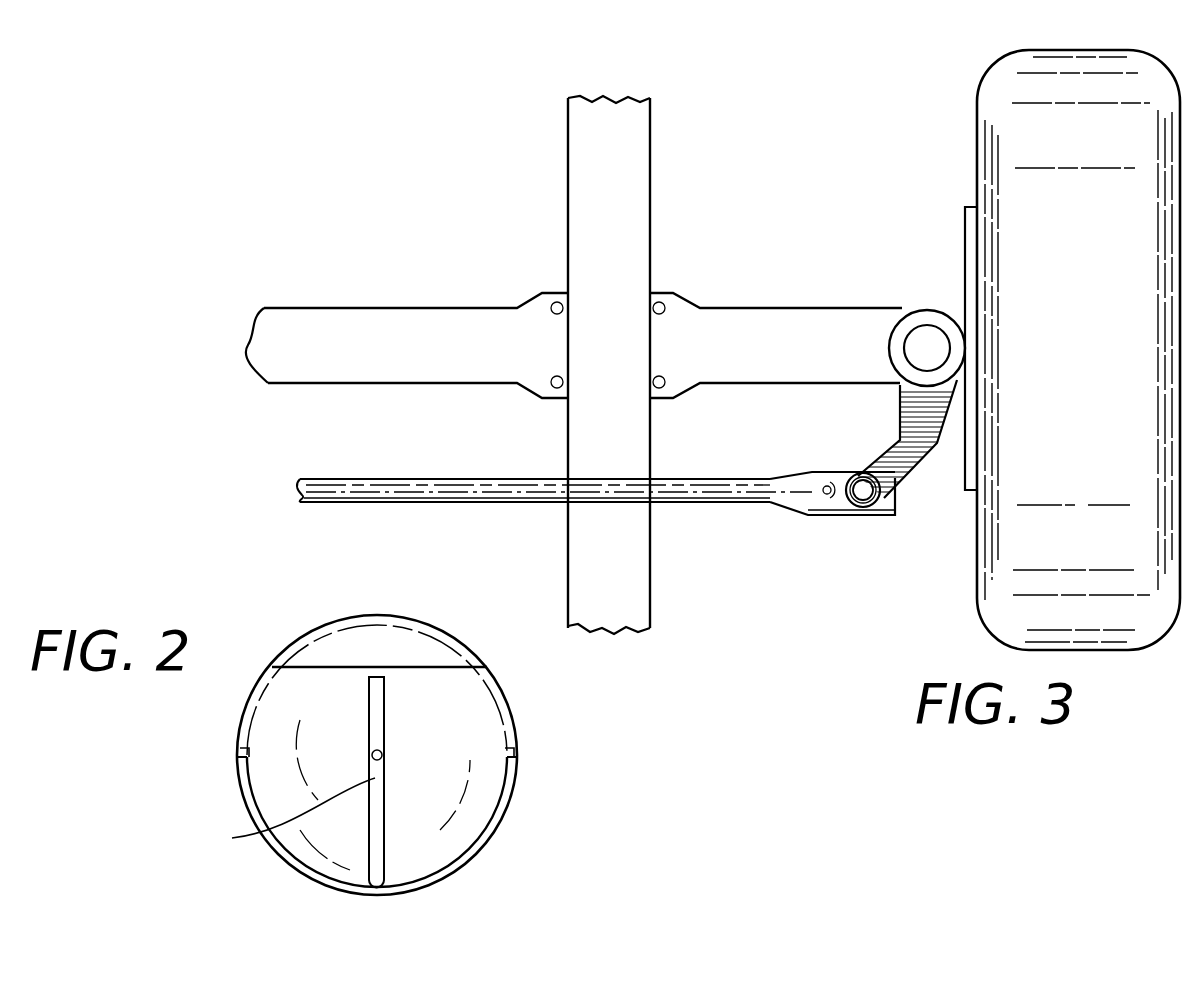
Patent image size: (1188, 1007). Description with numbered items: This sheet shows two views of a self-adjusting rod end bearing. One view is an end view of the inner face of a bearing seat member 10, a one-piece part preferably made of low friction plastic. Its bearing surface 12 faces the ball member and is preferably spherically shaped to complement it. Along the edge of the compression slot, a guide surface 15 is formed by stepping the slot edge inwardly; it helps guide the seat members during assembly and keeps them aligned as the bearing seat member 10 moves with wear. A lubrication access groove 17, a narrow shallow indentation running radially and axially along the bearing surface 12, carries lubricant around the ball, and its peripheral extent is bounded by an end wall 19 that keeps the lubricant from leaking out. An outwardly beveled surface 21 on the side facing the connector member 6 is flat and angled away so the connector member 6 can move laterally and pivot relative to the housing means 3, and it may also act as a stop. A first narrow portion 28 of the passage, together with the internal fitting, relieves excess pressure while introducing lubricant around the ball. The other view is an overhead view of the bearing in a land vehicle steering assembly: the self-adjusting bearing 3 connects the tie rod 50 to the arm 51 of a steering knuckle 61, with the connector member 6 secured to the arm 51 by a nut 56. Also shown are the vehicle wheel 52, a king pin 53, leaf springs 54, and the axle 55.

In FIG. 3, the housing means 3 is at (808, 515).
In FIG. 3, the connector member 6 is at (868, 515).
In FIG. 2, the bearing seat member 10 is at (520, 717).
In FIG. 2, the bearing surface 12 is at (407, 705).
In FIG. 2, the guide surface 15 is at (238, 748).
In FIG. 2, the lubrication access groove 17 is at (287, 817).
In FIG. 2, the end wall 19 is at (378, 675).
In FIG. 2, the beveled surface 21 is at (325, 640).
In FIG. 2, the first narrow portion 28 is at (383, 757).
In FIG. 3, the tie rod 50 is at (478, 490).
In FIG. 3, the arm 51 is at (913, 455).
In FIG. 3, the vehicle wheel 52 is at (1012, 115).
In FIG. 3, the king pin 53 is at (900, 312).
In FIG. 3, the leaf springs 54 is at (600, 98).
In FIG. 3, the axle 55 is at (450, 308).
In FIG. 3, the nut 56 is at (858, 475).
In FIG. 3, the steering knuckle 61 is at (930, 308).